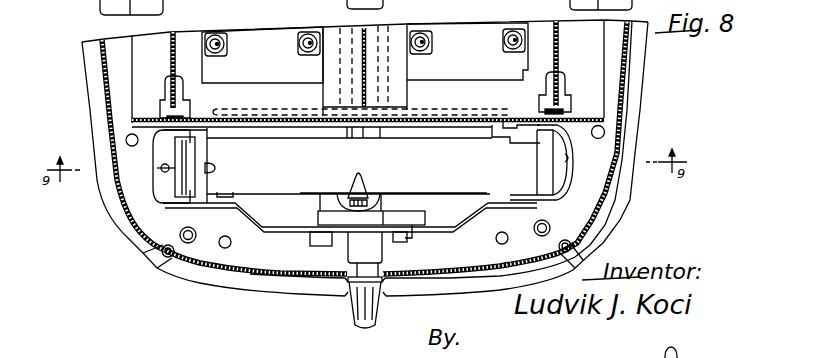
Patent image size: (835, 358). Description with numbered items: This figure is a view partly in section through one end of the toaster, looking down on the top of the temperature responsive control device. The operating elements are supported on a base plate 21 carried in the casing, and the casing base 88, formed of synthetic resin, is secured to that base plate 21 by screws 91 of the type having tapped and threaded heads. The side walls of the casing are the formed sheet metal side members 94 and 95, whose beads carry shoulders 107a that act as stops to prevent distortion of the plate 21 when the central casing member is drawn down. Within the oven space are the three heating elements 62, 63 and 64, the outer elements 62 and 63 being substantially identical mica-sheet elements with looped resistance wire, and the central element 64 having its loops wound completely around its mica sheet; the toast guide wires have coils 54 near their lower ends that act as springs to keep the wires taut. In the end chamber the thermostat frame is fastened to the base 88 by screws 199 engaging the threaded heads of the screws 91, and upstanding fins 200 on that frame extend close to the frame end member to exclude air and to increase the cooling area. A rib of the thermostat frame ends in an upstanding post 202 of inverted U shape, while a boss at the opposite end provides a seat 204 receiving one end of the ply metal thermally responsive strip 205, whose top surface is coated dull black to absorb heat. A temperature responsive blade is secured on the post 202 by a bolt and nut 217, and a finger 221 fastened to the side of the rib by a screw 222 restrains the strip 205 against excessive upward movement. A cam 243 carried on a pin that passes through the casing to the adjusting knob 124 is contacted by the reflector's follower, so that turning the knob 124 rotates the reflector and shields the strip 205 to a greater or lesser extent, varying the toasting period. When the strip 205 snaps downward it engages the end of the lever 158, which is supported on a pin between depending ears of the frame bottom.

The base plate 21 is at (363, 244).
The coils 54 is at (429, 45).
The heating element 62 is at (568, 50).
The heating element 63 is at (162, 64).
The central heating element 64 is at (397, 85).
The base 88 is at (628, 203).
The screws 91 is at (130, 147).
The side member 94 is at (630, 70).
The side member 95 is at (100, 78).
The shoulders 107a is at (162, 254).
The adjusting knob 124 is at (374, 308).
The lever 158 is at (385, 129).
The screws 199 is at (630, 4).
The upstanding fins 200 is at (460, 108).
The upstanding post 202 is at (197, 153).
The seat 204 is at (540, 158).
The thermally responsive strip 205 is at (345, 180).
The bolt and nut 217 is at (214, 170).
The finger 221 is at (364, 182).
The screw 222 is at (372, 192).
The cam 243 is at (413, 238).